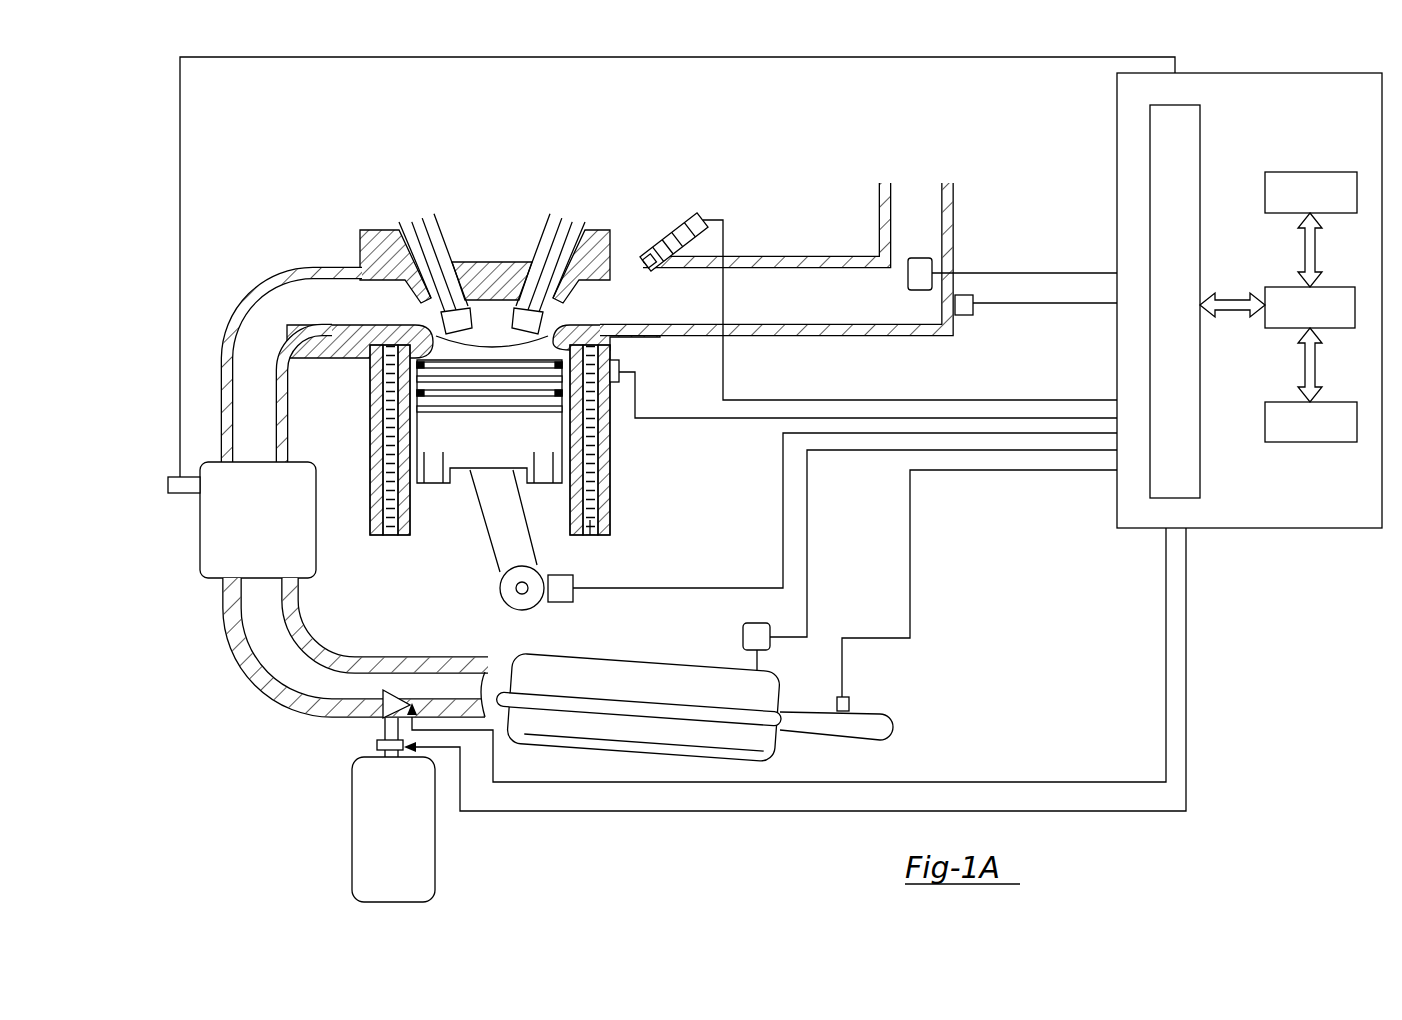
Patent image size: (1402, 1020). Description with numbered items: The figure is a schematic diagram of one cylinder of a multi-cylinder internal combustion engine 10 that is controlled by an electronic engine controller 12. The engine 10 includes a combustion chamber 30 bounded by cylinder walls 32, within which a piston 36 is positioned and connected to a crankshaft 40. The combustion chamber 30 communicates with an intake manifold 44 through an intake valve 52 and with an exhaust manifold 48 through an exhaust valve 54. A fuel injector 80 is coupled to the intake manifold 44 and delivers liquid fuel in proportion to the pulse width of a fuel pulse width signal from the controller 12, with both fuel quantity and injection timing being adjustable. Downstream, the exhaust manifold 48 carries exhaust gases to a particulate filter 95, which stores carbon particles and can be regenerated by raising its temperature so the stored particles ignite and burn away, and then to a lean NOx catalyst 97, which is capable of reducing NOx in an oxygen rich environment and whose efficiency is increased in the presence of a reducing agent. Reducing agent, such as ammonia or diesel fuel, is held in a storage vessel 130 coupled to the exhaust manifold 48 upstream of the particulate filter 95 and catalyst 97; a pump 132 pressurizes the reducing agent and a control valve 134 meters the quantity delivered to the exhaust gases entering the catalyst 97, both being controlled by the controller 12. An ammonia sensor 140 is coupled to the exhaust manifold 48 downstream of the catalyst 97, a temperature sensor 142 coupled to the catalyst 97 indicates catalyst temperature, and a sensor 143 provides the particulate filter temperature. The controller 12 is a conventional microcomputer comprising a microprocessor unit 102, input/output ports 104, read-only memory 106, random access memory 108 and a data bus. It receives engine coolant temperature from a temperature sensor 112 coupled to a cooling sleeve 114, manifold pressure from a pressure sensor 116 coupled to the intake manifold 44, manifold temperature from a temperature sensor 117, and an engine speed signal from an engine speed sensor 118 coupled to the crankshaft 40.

The internal combustion engine 10 is at (322, 149).
The electronic engine controller 12 is at (1271, 143).
The combustion chamber 30 is at (470, 342).
The cylinder walls 32 is at (412, 532).
The piston 36 is at (466, 462).
The crankshaft 40 is at (514, 610).
The intake manifold 44 is at (801, 308).
The exhaust manifold 48 is at (267, 318).
The intake valve 52 is at (565, 313).
The exhaust valve 54 is at (412, 315).
The fuel injector 80 is at (665, 233).
The particulate filter 95 is at (200, 542).
The lean NOx catalyst 97 is at (612, 655).
The microprocessor unit 102 is at (1278, 287).
The input/output ports 104 is at (1117, 150).
The read-only memory 106 is at (1311, 172).
The random access memory 108 is at (1312, 442).
The temperature sensor 112 is at (620, 361).
The cooling sleeve 114 is at (598, 527).
The pressure sensor 116 is at (912, 292).
The temperature sensor 117 is at (966, 318).
The engine speed sensor 118 is at (576, 586).
The storage vessel 130 is at (352, 834).
The pump 132 is at (375, 746).
The control valve 134 is at (370, 690).
The ammonia sensor 140 is at (849, 700).
The temperature sensor 142 is at (743, 636).
The sensor 143 is at (168, 484).